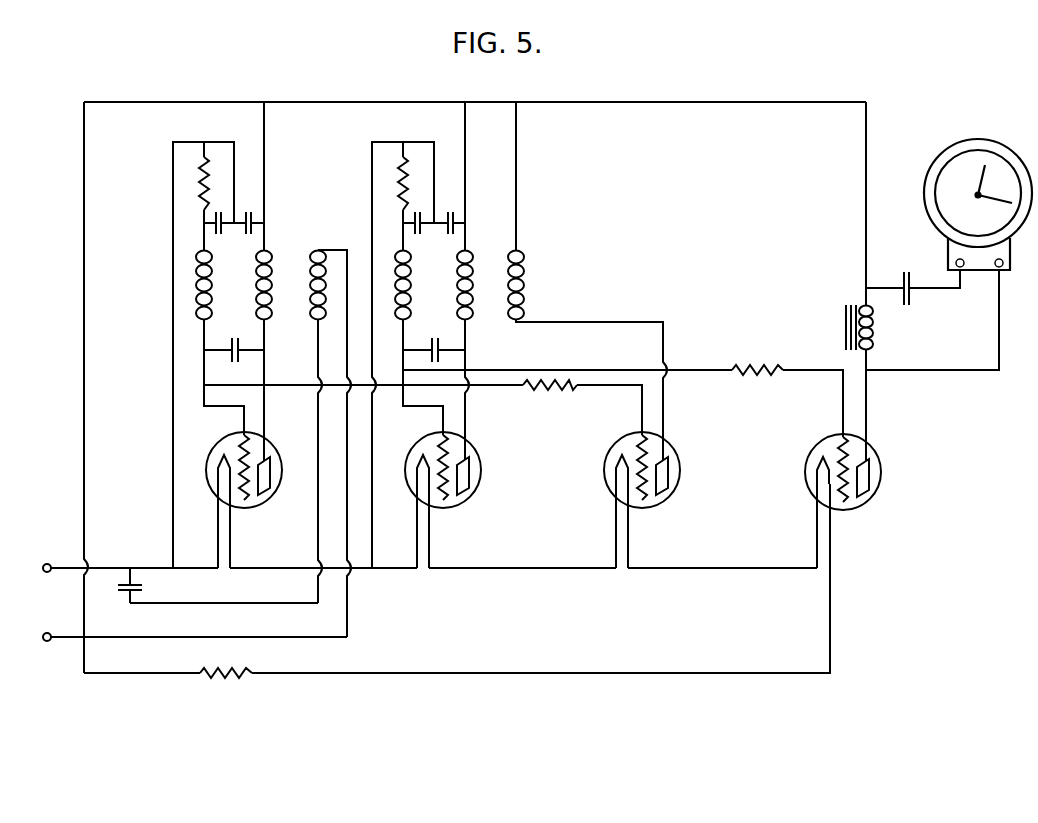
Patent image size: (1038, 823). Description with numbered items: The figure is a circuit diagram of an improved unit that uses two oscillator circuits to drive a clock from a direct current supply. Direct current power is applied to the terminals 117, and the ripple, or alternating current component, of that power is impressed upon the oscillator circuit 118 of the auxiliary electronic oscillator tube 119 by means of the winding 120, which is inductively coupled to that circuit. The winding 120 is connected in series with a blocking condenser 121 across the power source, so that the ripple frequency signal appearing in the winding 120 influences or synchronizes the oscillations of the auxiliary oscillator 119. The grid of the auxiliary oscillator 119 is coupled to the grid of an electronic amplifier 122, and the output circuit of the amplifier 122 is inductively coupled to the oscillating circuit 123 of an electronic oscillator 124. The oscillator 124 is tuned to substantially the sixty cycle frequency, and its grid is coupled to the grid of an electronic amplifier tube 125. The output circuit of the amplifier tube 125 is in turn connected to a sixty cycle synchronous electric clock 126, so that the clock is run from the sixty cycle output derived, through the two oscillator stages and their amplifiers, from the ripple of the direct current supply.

The terminals 117 is at (47, 576).
The oscillator circuit 118 is at (252, 300).
The auxiliary electronic oscillator tube 119 is at (283, 455).
The winding 120 is at (309, 256).
The blocking condenser 121 is at (143, 591).
The electronic amplifier 122 is at (690, 461).
The oscillating circuit 123 is at (453, 300).
The electronic oscillator 124 is at (483, 458).
The electronic amplifier tube 125 is at (893, 461).
The synchronous electric clock 126 is at (918, 199).